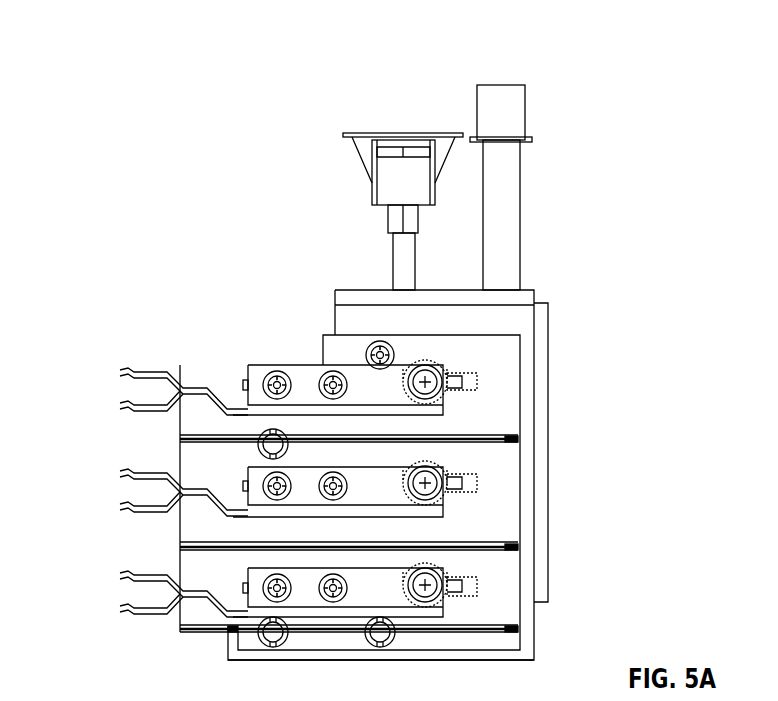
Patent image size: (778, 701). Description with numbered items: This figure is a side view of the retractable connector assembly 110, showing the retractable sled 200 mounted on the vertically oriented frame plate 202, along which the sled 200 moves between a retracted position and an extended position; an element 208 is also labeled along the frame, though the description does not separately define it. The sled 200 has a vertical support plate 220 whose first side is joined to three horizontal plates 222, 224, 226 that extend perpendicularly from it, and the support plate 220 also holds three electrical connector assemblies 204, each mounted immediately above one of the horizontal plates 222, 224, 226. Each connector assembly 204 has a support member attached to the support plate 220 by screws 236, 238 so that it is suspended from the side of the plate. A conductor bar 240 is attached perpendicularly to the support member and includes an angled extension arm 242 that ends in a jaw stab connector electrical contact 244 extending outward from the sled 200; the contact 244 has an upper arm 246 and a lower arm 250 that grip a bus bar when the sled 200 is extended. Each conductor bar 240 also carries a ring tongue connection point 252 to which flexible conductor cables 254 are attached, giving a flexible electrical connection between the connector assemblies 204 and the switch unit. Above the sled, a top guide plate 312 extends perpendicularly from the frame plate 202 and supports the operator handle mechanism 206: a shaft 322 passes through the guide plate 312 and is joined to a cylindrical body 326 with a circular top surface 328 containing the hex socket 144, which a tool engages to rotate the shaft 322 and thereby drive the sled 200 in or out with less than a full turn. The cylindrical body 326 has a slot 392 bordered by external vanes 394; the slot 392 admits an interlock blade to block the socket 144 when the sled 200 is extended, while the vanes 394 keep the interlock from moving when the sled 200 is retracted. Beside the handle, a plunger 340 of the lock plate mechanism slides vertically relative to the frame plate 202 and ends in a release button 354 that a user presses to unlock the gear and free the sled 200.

The retractable connector assembly 110 is at (185, 108).
The socket 144 is at (402, 133).
The retractable sled 200 is at (490, 583).
The frame plate 202 is at (515, 318).
The electrical connector assembly 204 is at (233, 375).
The operator handle mechanism 206 is at (356, 132).
The frame side 208 is at (522, 230).
The vertical support plate 220 is at (453, 393).
The horizontal plate 222 is at (473, 432).
The horizontal plate 224 is at (520, 547).
The horizontal plate 226 is at (520, 632).
The screw 236 is at (263, 375).
The screw 238 is at (318, 375).
The conductor bar 240 is at (493, 442).
The angled extension arm 242 is at (215, 412).
The jaw stab connector electrical contact 244 is at (135, 392).
The upper arm 246 is at (120, 373).
The lower arm 250 is at (120, 404).
The ring tongue connection point 252 is at (520, 333).
The flexible conductor cable 254 is at (460, 373).
The top guide plate 312 is at (335, 300).
The shaft 322 is at (390, 272).
The cylindrical body 326 is at (372, 190).
The circular top surface 328 is at (420, 133).
The plunger 340 is at (505, 200).
The release button 354 is at (512, 112).
The slot 392 is at (372, 155).
The external vanes 394 is at (443, 147).